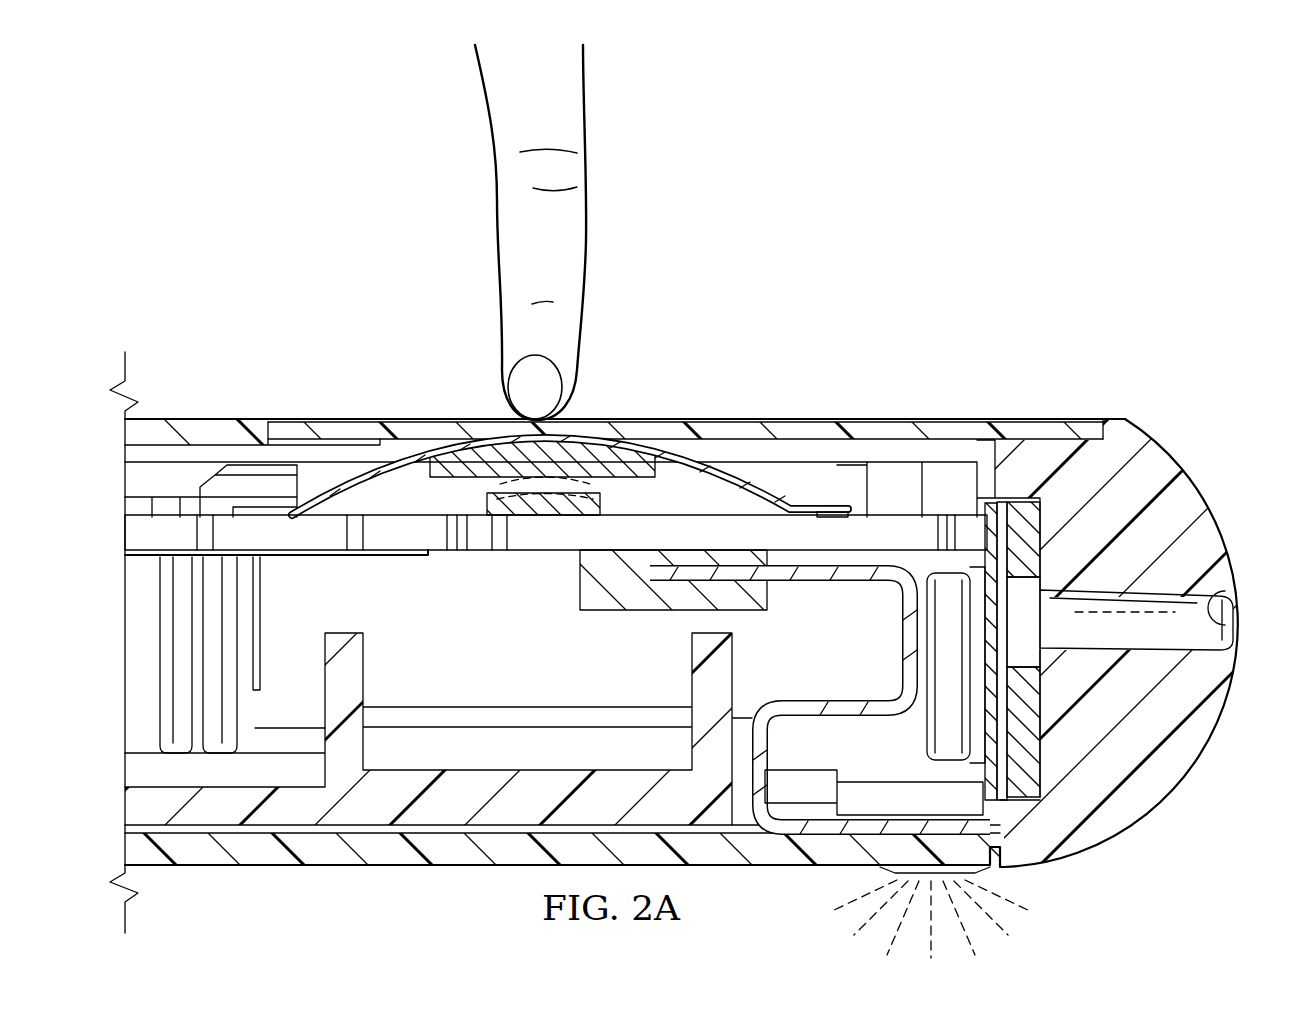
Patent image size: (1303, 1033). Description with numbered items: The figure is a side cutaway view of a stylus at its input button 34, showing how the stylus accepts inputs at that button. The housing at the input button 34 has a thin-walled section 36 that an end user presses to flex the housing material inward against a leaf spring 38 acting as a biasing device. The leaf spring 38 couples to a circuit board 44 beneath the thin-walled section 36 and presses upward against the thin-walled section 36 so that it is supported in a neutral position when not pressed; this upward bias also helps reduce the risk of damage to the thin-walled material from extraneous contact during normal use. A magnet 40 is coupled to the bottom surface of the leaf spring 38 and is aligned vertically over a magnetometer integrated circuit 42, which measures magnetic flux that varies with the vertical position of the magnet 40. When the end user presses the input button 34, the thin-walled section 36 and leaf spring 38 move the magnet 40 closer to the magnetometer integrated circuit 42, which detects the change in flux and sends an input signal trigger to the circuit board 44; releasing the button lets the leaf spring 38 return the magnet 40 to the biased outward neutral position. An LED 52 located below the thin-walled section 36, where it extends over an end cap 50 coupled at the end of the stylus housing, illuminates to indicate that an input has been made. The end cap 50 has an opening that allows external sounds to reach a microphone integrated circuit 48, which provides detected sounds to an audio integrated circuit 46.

The input button 34 is at (756, 372).
The thin-walled section 36 is at (438, 432).
The leaf spring 38 is at (647, 455).
The magnet 40 is at (578, 452).
The magnetometer integrated circuit 42 is at (550, 515).
The circuit board 44 is at (415, 540).
The audio integrated circuit 46 is at (640, 601).
The microphone integrated circuit 48 is at (927, 737).
The end cap 50 is at (1237, 612).
The LED 52 is at (985, 900).